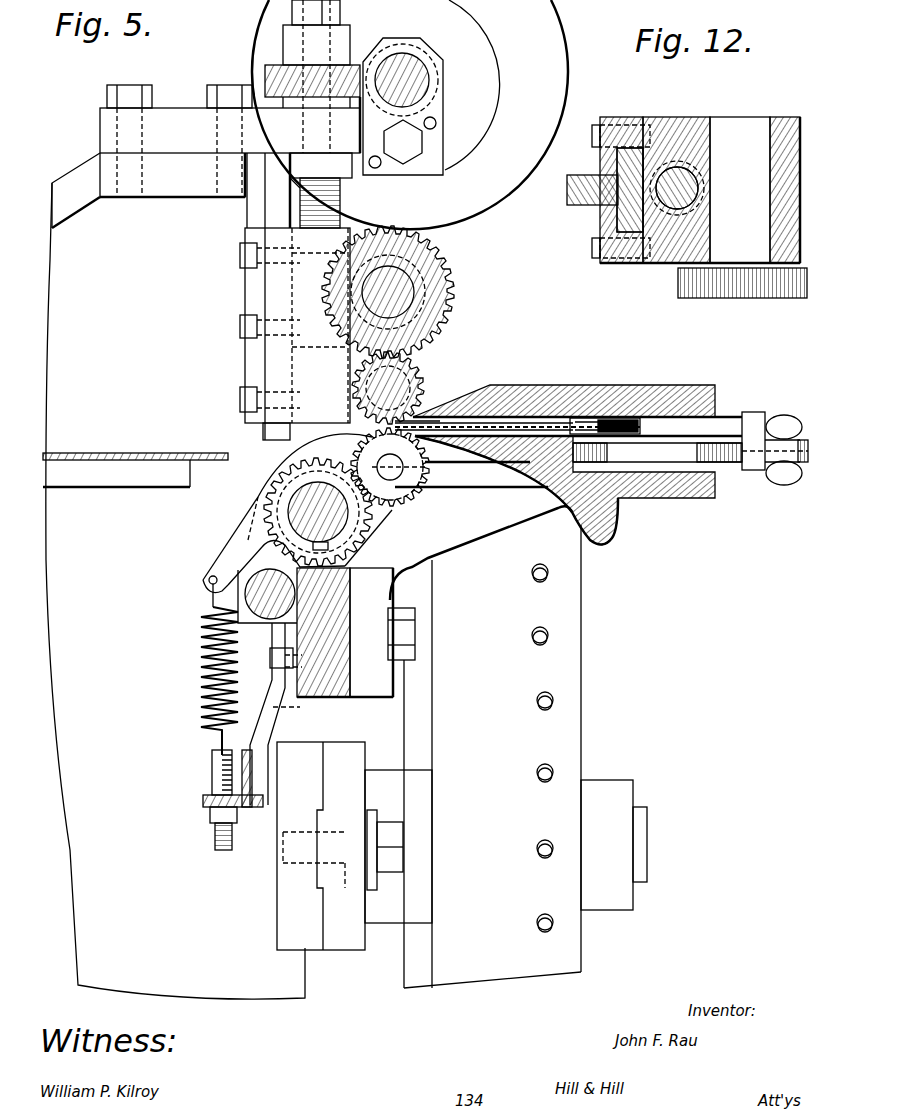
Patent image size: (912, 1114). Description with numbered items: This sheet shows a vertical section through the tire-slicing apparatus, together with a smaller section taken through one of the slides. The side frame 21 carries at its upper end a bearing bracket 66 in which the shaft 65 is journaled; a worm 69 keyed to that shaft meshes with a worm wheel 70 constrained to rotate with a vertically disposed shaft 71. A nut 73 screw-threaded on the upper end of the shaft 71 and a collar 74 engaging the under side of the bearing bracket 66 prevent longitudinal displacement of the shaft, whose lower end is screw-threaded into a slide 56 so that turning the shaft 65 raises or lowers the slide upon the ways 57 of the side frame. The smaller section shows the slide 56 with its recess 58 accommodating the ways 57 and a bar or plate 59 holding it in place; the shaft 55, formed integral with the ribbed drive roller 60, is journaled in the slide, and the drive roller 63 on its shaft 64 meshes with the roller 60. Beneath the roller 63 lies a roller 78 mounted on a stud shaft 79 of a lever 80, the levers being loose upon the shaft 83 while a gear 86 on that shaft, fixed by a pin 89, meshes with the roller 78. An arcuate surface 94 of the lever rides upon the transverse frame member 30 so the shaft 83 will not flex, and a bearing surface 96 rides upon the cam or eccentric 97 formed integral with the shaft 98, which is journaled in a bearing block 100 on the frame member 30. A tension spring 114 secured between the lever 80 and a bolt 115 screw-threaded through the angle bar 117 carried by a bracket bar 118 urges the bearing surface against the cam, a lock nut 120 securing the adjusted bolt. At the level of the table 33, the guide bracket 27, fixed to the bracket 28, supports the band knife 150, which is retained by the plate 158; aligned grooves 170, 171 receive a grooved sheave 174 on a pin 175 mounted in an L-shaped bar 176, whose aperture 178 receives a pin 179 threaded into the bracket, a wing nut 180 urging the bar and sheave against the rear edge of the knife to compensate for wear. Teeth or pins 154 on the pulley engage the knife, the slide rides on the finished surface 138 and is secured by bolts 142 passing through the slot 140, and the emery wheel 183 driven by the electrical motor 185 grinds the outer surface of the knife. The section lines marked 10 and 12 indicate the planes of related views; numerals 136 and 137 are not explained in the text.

In FIG. 5, the nut 73 is at (340, 15).
In FIG. 5, the worm wheel 70 is at (268, 72).
In FIG. 5, the bearing bracket 66 is at (172, 112).
In FIG. 5, the shaft 65 is at (418, 77).
In FIG. 5, the worm 69 is at (443, 86).
In FIG. 5, the side frame 21 is at (69, 183).
In FIG. 12, the side frame 21 is at (567, 191).
In FIG. 5, the collar 74 is at (342, 180).
In FIG. 5, the slide 56 is at (352, 232).
In FIG. 12, the slide 56 is at (688, 126).
In FIG. 5, the ways 57 is at (270, 212).
In FIG. 12, the ways 57 is at (647, 127).
In FIG. 5, the bar or plate 59 is at (252, 367).
In FIG. 12, the bar or plate 59 is at (607, 125).
In FIG. 5, the recess 58 is at (262, 357).
In FIG. 12, the recess 58 is at (641, 213).
In FIG. 5, the shaft 55 is at (436, 263).
In FIG. 12, the shaft 55 is at (742, 128).
In FIG. 5, the ribbed drive roller 60 is at (444, 282).
In FIG. 12, the ribbed drive roller 60 is at (678, 287).
In FIG. 5, the shaft 64 is at (425, 384).
In FIG. 5, the drive roller 63 is at (414, 372).
In FIG. 5, the roller 78 is at (417, 494).
In FIG. 5, the stud shaft 79 is at (400, 472).
In FIG. 5, the shaft 83 is at (302, 492).
In FIG. 5, the arcuate surface 94 is at (350, 557).
In FIG. 5, the pin 89 is at (330, 548).
In FIG. 5, the lever 80 is at (236, 553).
In FIG. 5, the gear 86 is at (268, 509).
In FIG. 5, the bearing surface 96 is at (238, 566).
In FIG. 5, the cam or eccentric 97 is at (268, 620).
In FIG. 5, the transverse frame member 30 is at (352, 700).
In FIG. 5, the bracket 28 is at (484, 520).
In FIG. 5, the emery wheel 183 is at (582, 696).
In FIG. 5, the teeth or pins 154 is at (535, 580).
In FIG. 5, the block 137 is at (620, 912).
In FIG. 5, the electrical motor 185 is at (648, 840).
In FIG. 5, the finished surface 138 is at (277, 887).
In FIG. 5, the base block 136 is at (335, 920).
In FIG. 5, the bolt 142 is at (386, 825).
In FIG. 5, the slot 140 is at (346, 872).
In FIG. 5, the shaft 98 is at (212, 596).
In FIG. 5, the tension spring 114 is at (200, 652).
In FIG. 5, the bearing block 100 is at (210, 612).
In FIG. 5, the bolt 115 is at (212, 769).
In FIG. 5, the angle bar 117 is at (205, 802).
In FIG. 5, the lock nut 120 is at (210, 818).
In FIG. 5, the bracket bar 118 is at (265, 810).
In FIG. 5, the table 33 is at (131, 453).
In FIG. 5, the plate 158 is at (548, 393).
In FIG. 5, the L-shaped bar 176 is at (665, 425).
In FIG. 5, the knife 150 is at (495, 423).
In FIG. 5, the groove 171 is at (522, 423).
In FIG. 5, the grooved pulley or sheave 174 is at (620, 424).
In FIG. 5, the pin 175 is at (592, 418).
In FIG. 5, the guide bracket 27 is at (660, 492).
In FIG. 5, the groove 170 is at (516, 450).
In FIG. 5, the pin 179 is at (737, 463).
In FIG. 5, the aperture 178 is at (748, 440).
In FIG. 5, the wing nut 180 is at (782, 424).
In FIG. 5, the section line 10 is at (808, 434).
In FIG. 5, the section line 12 is at (226, 292).
In FIG. 12, the vertical shaft 71 is at (698, 191).